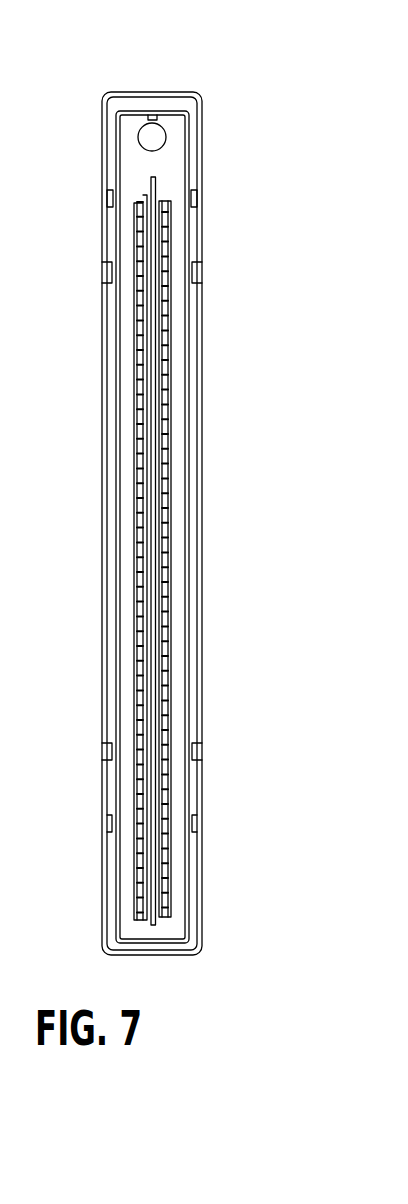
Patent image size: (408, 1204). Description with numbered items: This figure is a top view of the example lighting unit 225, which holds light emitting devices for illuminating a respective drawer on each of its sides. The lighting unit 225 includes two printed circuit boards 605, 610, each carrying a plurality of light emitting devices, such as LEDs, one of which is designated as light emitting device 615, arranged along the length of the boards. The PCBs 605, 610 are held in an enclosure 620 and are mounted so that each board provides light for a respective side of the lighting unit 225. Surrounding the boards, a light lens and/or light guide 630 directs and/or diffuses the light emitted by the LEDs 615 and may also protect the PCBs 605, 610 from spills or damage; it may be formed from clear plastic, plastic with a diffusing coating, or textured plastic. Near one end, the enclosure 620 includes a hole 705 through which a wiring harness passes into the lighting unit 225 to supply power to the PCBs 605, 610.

The lighting unit 225 is at (208, 79).
The printed circuit board 605 is at (143, 197).
The printed circuit board 610 is at (156, 225).
The light emitting device 615 is at (163, 200).
The enclosure 620 is at (186, 300).
The light lens and/or light guide 630 is at (203, 351).
The hole 705 is at (148, 137).